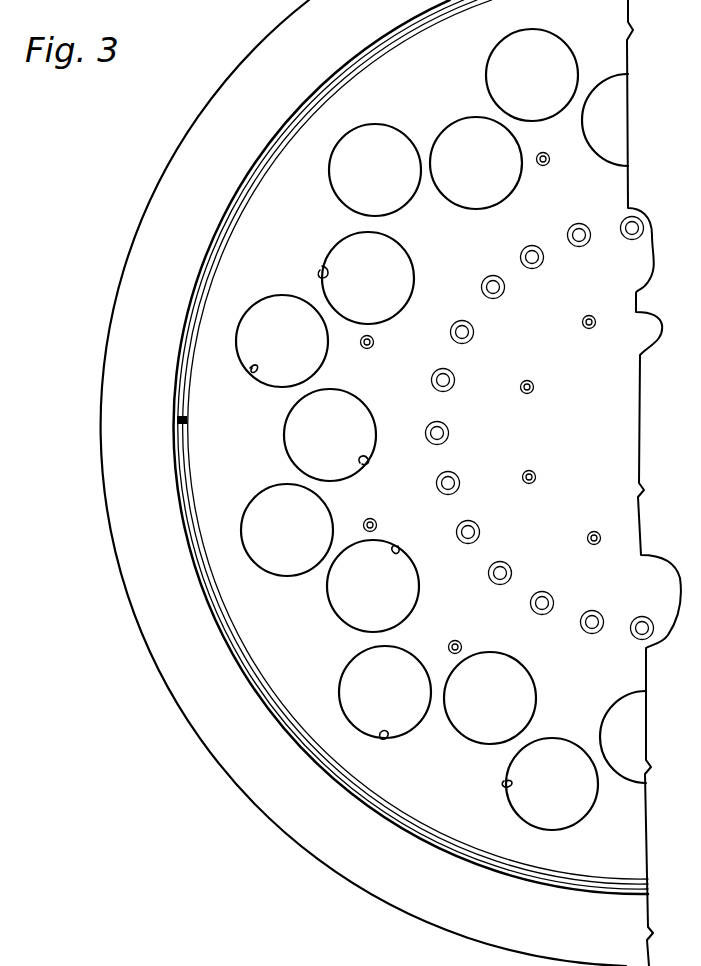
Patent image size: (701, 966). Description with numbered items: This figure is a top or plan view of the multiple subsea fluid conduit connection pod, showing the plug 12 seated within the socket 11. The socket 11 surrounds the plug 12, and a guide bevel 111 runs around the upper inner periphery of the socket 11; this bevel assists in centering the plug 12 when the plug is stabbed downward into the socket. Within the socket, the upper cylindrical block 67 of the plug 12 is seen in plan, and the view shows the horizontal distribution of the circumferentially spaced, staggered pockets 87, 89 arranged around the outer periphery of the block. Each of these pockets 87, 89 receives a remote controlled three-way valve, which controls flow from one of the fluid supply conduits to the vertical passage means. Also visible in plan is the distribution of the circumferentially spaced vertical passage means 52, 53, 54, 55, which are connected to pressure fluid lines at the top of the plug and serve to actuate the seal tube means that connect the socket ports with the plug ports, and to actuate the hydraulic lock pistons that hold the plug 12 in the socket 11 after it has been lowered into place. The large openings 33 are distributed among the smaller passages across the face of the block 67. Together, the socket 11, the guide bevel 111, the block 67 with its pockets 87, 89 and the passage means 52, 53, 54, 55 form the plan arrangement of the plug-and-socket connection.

The socket 11 is at (126, 368).
The plug 12 is at (178, 421).
The large openings 33 is at (510, 75).
The vertical passage means 52 is at (590, 241).
The vertical passage means 53 is at (474, 333).
The vertical passage means 54 is at (596, 325).
The vertical passage means 55 is at (550, 162).
The upper cylindrical block 67 is at (308, 640).
The pocket 87 is at (254, 368).
The pocket 89 is at (322, 266).
The guide bevel 111 is at (188, 318).